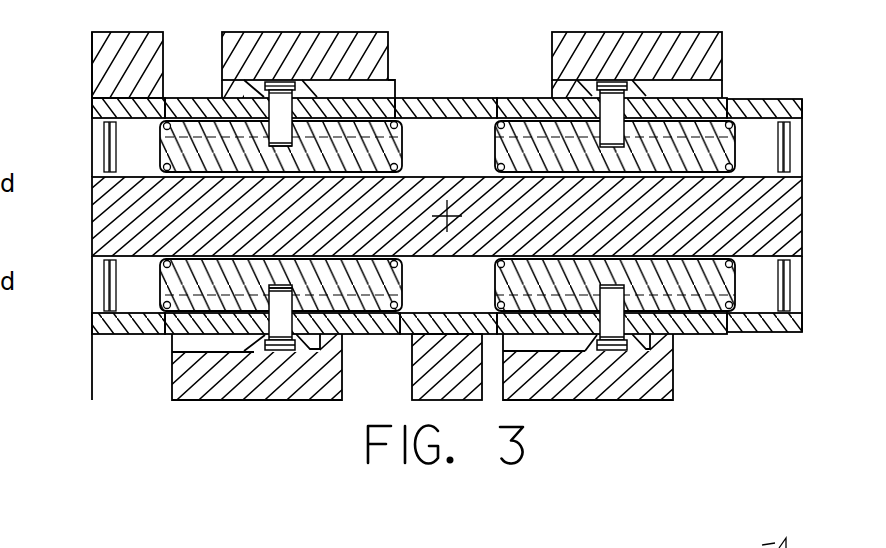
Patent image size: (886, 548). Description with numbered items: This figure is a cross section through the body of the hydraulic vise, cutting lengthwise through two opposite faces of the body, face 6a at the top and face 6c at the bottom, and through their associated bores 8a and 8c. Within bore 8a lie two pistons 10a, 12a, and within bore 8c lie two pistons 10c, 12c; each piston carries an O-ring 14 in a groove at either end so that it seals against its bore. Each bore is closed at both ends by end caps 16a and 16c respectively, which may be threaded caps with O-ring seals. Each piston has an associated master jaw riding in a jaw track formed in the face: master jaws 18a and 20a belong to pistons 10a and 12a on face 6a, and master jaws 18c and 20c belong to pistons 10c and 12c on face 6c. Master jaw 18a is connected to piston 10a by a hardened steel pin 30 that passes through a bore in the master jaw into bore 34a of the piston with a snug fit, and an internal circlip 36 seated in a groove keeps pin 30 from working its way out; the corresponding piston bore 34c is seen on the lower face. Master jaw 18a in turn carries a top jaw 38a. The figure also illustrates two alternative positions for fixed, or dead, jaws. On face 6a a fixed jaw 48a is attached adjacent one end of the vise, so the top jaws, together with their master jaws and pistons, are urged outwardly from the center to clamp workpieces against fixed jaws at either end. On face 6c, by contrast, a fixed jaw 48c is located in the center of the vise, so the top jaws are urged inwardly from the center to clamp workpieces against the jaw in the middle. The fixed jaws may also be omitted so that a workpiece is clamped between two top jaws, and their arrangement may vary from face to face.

The fixed jaw 48a is at (118, 53).
The fixed jaw 48c is at (437, 381).
The internal circlip 36 is at (277, 86).
The pin 30 is at (279, 73).
The top jaw 38a is at (380, 48).
The master jaw 18a is at (368, 97).
The master jaw 18c is at (333, 323).
The face 6a is at (480, 98).
The face 6c is at (143, 334).
The master jaw 20a is at (700, 107).
The master jaw 20c is at (690, 336).
The bore 8a is at (768, 124).
The bore 8c is at (749, 312).
The end cap 16a is at (104, 142).
The end cap 16c is at (104, 298).
The bore of piston 34a is at (278, 143).
The bore of piston 34c is at (280, 300).
The piston 10a is at (365, 165).
The piston 10c is at (366, 288).
The piston 12a is at (698, 165).
The piston 12c is at (697, 288).
The O-ring 14 is at (495, 163).